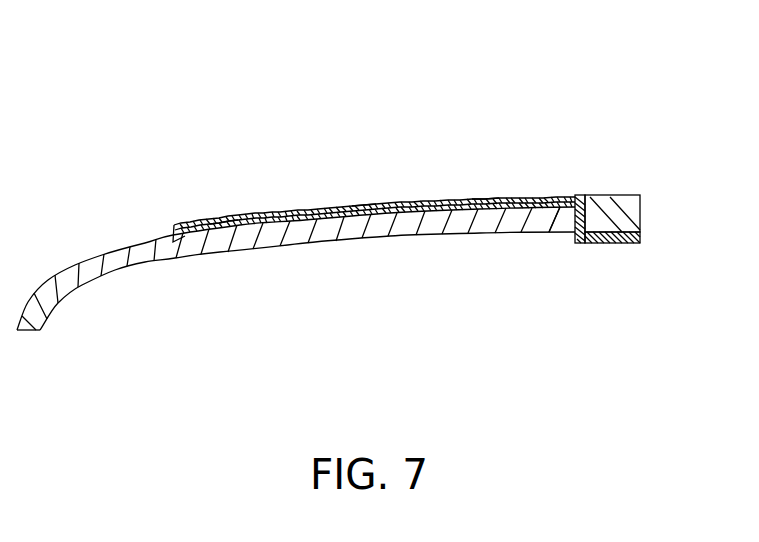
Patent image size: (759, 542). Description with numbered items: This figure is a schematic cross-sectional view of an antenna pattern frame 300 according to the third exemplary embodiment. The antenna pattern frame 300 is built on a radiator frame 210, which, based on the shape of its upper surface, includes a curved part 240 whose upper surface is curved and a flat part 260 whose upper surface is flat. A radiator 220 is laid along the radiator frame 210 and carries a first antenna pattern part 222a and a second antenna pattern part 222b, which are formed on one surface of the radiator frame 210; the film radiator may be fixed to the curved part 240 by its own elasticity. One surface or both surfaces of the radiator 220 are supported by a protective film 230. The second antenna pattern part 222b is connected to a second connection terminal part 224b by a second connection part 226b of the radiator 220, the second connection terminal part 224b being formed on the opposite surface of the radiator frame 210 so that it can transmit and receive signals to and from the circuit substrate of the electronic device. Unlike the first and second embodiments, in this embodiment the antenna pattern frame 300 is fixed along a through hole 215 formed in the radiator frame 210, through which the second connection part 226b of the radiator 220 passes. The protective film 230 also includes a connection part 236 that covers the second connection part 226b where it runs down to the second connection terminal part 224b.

The antenna pattern frame 300 is at (108, 45).
The radiator frame 210 is at (239, 360).
The curved part 240 is at (80, 289).
The flat part 260 is at (234, 247).
The radiator 220 is at (176, 228).
The first antenna pattern part 222a is at (222, 228).
The second antenna pattern part 222b is at (363, 205).
The protective film 230 is at (483, 199).
The through hole 215 is at (583, 195).
The connection part 236 is at (618, 215).
The second connection terminal part 224b is at (605, 243).
The second connection part 226b is at (573, 222).